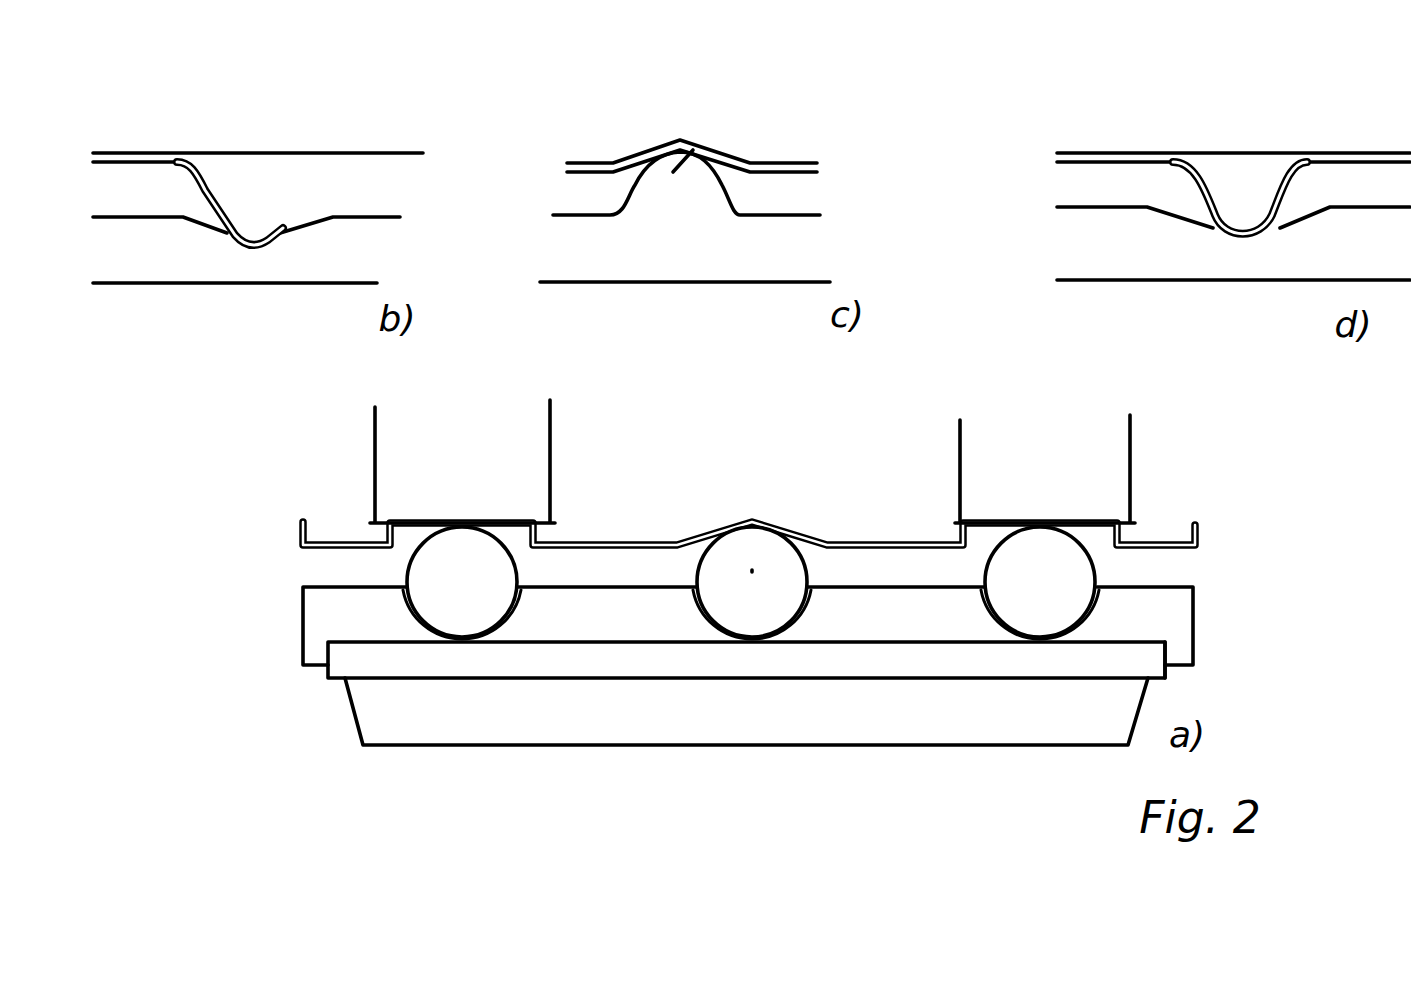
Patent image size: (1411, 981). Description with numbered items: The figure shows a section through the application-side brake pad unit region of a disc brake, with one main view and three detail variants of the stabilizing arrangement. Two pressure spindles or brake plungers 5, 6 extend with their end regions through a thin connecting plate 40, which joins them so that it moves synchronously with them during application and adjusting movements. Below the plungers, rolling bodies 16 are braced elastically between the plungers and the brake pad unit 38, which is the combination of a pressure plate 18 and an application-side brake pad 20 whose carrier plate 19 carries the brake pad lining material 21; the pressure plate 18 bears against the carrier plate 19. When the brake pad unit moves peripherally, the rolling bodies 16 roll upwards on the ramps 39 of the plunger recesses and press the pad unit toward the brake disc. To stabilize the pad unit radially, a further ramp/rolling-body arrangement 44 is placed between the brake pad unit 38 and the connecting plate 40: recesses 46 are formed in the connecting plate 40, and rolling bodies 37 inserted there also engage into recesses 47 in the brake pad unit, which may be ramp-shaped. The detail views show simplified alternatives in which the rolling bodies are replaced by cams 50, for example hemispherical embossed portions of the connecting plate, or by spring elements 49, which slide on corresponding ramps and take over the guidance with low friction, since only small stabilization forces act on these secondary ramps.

The brake plunger 5 is at (520, 455).
The brake plunger 6 is at (1113, 465).
The rolling body 16 is at (433, 600).
The pressure plate 18 is at (142, 263).
The carrier plate 19 is at (552, 660).
The application-side brake pad 20 is at (1130, 617).
The brake pad lining material 21 is at (553, 728).
The rolling body 37 is at (752, 570).
The brake pad unit 38 is at (1208, 611).
The ramp 39 is at (1095, 545).
The connecting plate 40 is at (400, 157).
The ramp/rolling-body arrangement 44 is at (768, 508).
The recess 46 is at (718, 516).
The recess 47 is at (790, 640).
The spring element 49 is at (290, 215).
The cam 50 is at (693, 150).